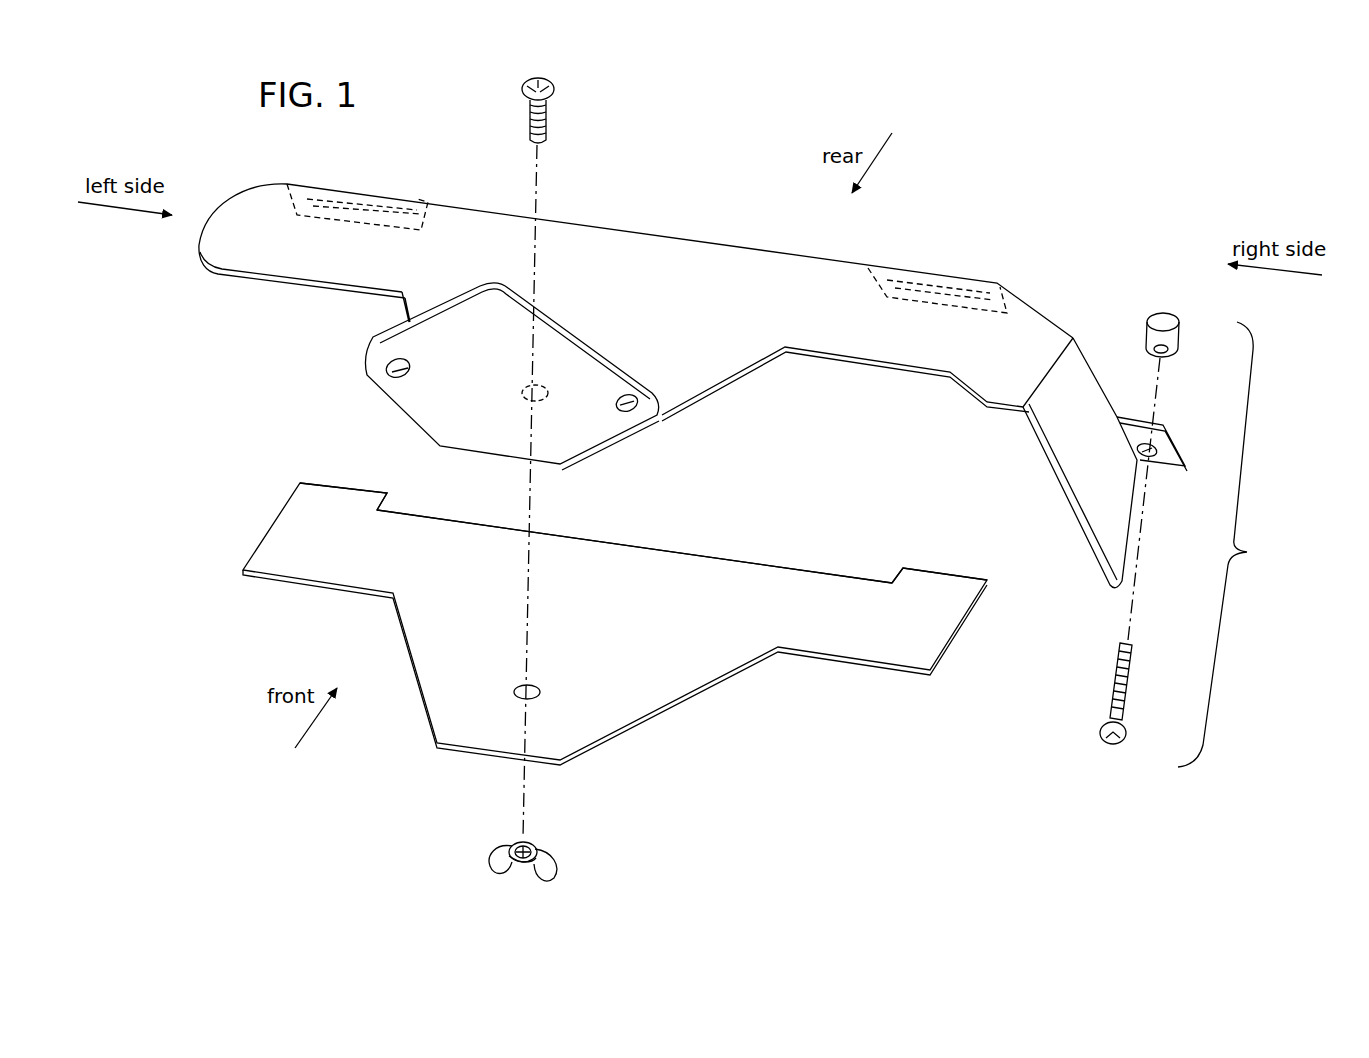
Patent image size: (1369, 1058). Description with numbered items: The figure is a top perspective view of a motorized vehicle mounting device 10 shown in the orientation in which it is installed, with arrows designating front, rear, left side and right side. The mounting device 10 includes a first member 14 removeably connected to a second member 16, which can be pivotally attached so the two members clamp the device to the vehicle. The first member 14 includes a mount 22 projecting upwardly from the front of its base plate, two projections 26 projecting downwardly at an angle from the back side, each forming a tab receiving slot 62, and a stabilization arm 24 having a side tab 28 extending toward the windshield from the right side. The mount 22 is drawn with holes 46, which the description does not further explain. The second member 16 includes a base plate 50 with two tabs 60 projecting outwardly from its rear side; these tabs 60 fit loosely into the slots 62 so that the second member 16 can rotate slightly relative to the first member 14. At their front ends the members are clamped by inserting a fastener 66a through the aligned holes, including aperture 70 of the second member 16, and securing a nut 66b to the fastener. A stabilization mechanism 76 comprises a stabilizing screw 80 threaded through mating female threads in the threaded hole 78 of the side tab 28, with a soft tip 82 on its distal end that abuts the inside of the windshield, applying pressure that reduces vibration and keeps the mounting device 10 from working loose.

The mounting device 10 is at (1032, 188).
The first member 14 is at (707, 238).
The second member 16 is at (738, 552).
The mount 22 is at (467, 353).
The stabilization arm 24 is at (1077, 398).
The projections 26 is at (347, 220).
The side tab 28 is at (1178, 446).
The mounting holes 46 is at (393, 372).
The base plate 50 is at (628, 562).
The tabs 60 is at (330, 498).
The slots 62 is at (300, 218).
The fastener 66a is at (553, 92).
The nut 66b is at (500, 858).
The aperture 70 is at (537, 690).
The stabilization mechanism 76 is at (1231, 544).
The threaded hole 78 is at (1147, 453).
The stabilizing screw 80 is at (1114, 689).
The soft tip 82 is at (1167, 328).